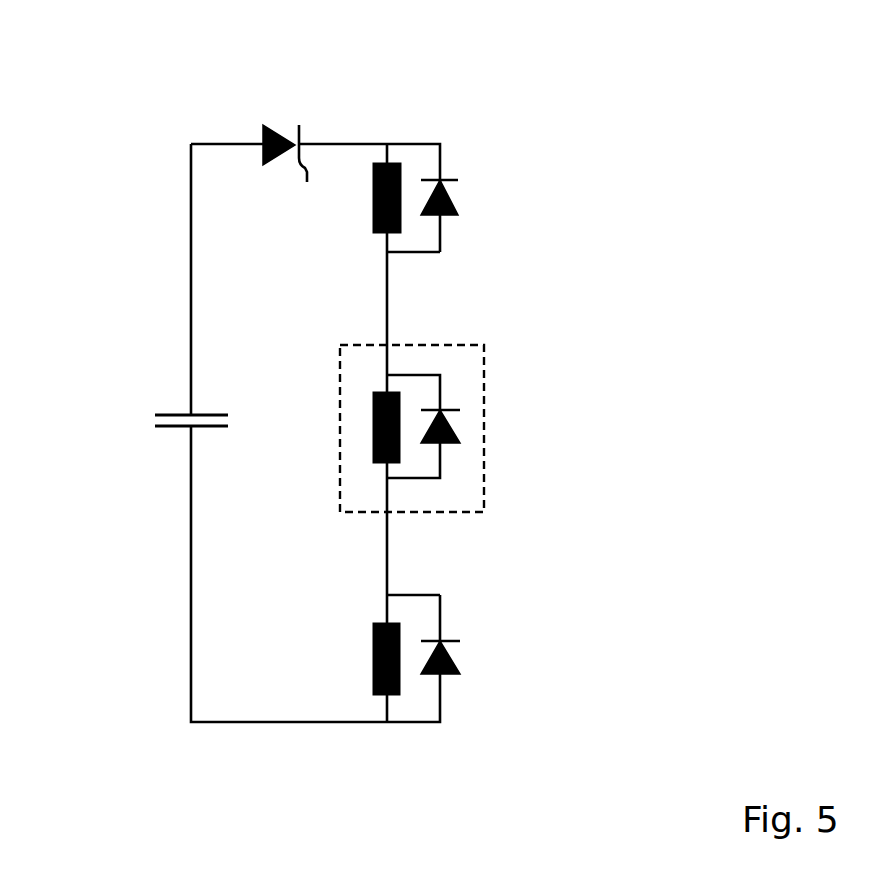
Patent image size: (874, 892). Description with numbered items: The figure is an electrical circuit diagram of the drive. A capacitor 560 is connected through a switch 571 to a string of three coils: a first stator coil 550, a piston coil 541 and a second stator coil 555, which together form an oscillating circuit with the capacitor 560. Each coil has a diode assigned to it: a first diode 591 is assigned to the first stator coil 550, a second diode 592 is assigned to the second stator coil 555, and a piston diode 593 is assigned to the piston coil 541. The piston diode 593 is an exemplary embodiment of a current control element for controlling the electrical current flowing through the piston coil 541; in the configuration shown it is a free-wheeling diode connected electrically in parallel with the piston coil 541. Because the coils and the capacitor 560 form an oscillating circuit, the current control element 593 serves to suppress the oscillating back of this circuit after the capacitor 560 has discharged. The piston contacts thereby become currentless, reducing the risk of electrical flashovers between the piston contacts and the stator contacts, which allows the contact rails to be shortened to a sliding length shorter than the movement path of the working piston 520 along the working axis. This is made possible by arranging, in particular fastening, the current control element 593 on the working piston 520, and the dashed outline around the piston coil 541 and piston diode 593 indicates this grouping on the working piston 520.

The working piston 520 is at (531, 400).
The piston coil 541 is at (400, 415).
The first stator coil 550 is at (401, 175).
The second stator coil 555 is at (400, 640).
The capacitor 560 is at (155, 418).
The switch 571 is at (275, 132).
The first diode 591 is at (452, 197).
The second diode 592 is at (455, 660).
The piston diode 593 is at (455, 430).